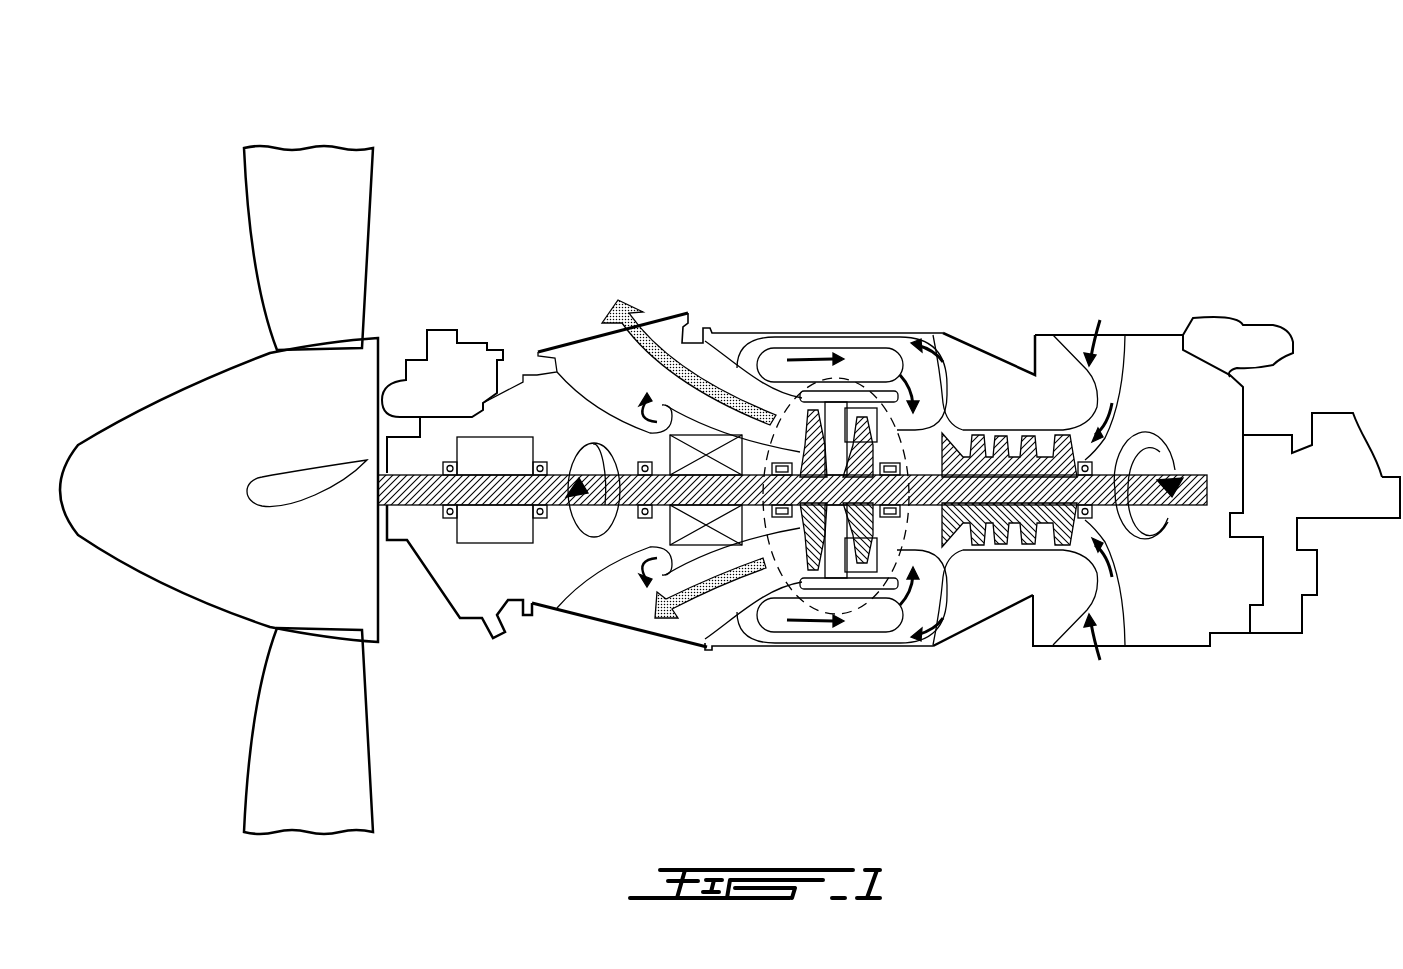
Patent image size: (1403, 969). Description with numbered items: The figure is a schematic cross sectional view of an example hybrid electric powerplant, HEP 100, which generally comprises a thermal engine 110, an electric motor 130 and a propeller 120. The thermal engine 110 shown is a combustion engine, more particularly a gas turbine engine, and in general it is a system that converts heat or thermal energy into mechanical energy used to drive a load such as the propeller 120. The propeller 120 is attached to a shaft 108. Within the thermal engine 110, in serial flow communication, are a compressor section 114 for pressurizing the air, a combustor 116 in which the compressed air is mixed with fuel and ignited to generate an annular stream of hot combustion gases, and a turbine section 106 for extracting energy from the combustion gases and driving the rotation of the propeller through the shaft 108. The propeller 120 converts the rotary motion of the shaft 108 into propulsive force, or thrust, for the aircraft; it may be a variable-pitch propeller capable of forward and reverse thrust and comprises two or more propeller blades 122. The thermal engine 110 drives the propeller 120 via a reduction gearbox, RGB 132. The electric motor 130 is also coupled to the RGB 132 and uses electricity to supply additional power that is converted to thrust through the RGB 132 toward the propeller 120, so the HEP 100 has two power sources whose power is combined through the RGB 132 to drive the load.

The hybrid electric powerplant 100 is at (1062, 170).
The turbine section 106 is at (855, 614).
The shaft 108 is at (414, 500).
The thermal engine 110 is at (1330, 299).
The compressor section 114 is at (1000, 568).
The combustor 116 is at (862, 368).
The propeller 120 is at (378, 135).
The propeller blades 122 is at (345, 187).
The electric motor 130 is at (665, 526).
The reduction gearbox 132 is at (513, 437).